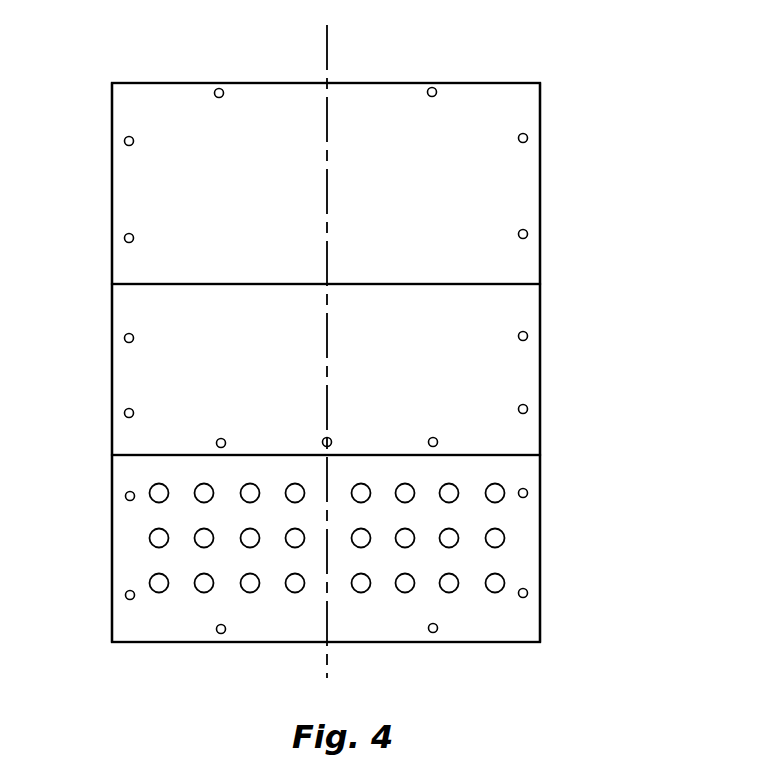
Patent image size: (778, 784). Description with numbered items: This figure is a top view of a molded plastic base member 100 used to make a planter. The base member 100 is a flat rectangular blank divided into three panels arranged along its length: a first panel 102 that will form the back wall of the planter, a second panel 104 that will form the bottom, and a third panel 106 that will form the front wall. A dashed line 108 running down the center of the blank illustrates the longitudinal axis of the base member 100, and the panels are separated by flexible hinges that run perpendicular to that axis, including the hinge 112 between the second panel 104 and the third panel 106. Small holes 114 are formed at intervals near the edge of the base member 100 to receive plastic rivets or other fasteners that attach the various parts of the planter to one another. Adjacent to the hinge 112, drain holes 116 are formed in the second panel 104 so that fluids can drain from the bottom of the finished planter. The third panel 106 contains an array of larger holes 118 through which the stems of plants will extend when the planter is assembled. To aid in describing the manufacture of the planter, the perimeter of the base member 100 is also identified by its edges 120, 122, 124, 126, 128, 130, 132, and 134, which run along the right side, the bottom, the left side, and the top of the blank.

The base member 100 is at (593, 62).
The first panel 102 is at (507, 216).
The second panel 104 is at (502, 388).
The third panel 106 is at (535, 552).
The line 108 is at (329, 42).
The flexible hinge 112 is at (148, 455).
The small holes 114 is at (219, 88).
The drain holes 116 is at (221, 438).
The holes 118 is at (449, 487).
The edge 120 is at (541, 185).
The edge 122 is at (541, 350).
The edge 124 is at (532, 584).
The edge 126 is at (257, 643).
The edge 128 is at (112, 595).
The edge 130 is at (112, 375).
The edge 132 is at (112, 165).
The edge 134 is at (138, 83).